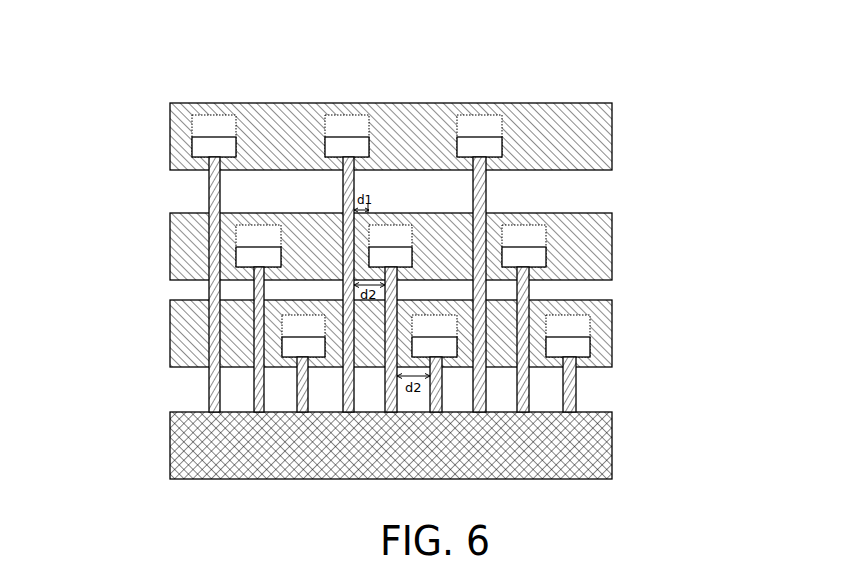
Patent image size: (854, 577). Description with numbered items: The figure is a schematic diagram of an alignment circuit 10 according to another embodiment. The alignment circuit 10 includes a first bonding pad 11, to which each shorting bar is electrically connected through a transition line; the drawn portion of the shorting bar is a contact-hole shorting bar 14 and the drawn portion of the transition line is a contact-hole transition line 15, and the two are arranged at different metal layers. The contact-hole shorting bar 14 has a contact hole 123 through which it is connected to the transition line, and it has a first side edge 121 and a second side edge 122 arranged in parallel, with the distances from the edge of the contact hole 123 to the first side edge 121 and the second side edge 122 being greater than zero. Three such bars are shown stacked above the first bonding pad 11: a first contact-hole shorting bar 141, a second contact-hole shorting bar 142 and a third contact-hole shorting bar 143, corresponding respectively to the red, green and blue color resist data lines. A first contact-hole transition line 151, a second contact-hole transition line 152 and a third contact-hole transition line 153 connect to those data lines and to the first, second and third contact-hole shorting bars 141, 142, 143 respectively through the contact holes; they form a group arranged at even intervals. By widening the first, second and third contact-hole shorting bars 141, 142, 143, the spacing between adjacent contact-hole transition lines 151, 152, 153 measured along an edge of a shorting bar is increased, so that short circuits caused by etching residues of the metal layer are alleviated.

The alignment circuit 10 is at (435, 249).
The first bonding pad 11 is at (588, 440).
The contact-hole shorting bar 14 is at (475, 235).
The first contact-hole shorting bar 141 is at (612, 136).
The second contact-hole shorting bar 142 is at (612, 226).
The third contact-hole shorting bar 143 is at (445, 333).
The first side edge 121 is at (262, 103).
The second side edge 122 is at (435, 167).
The contact hole 123 is at (612, 337).
The contact-hole transition line 15 is at (308, 284).
The first contact-hole transition line 151 is at (209, 200).
The second contact-hole transition line 152 is at (258, 286).
The third contact-hole transition line 153 is at (303, 392).